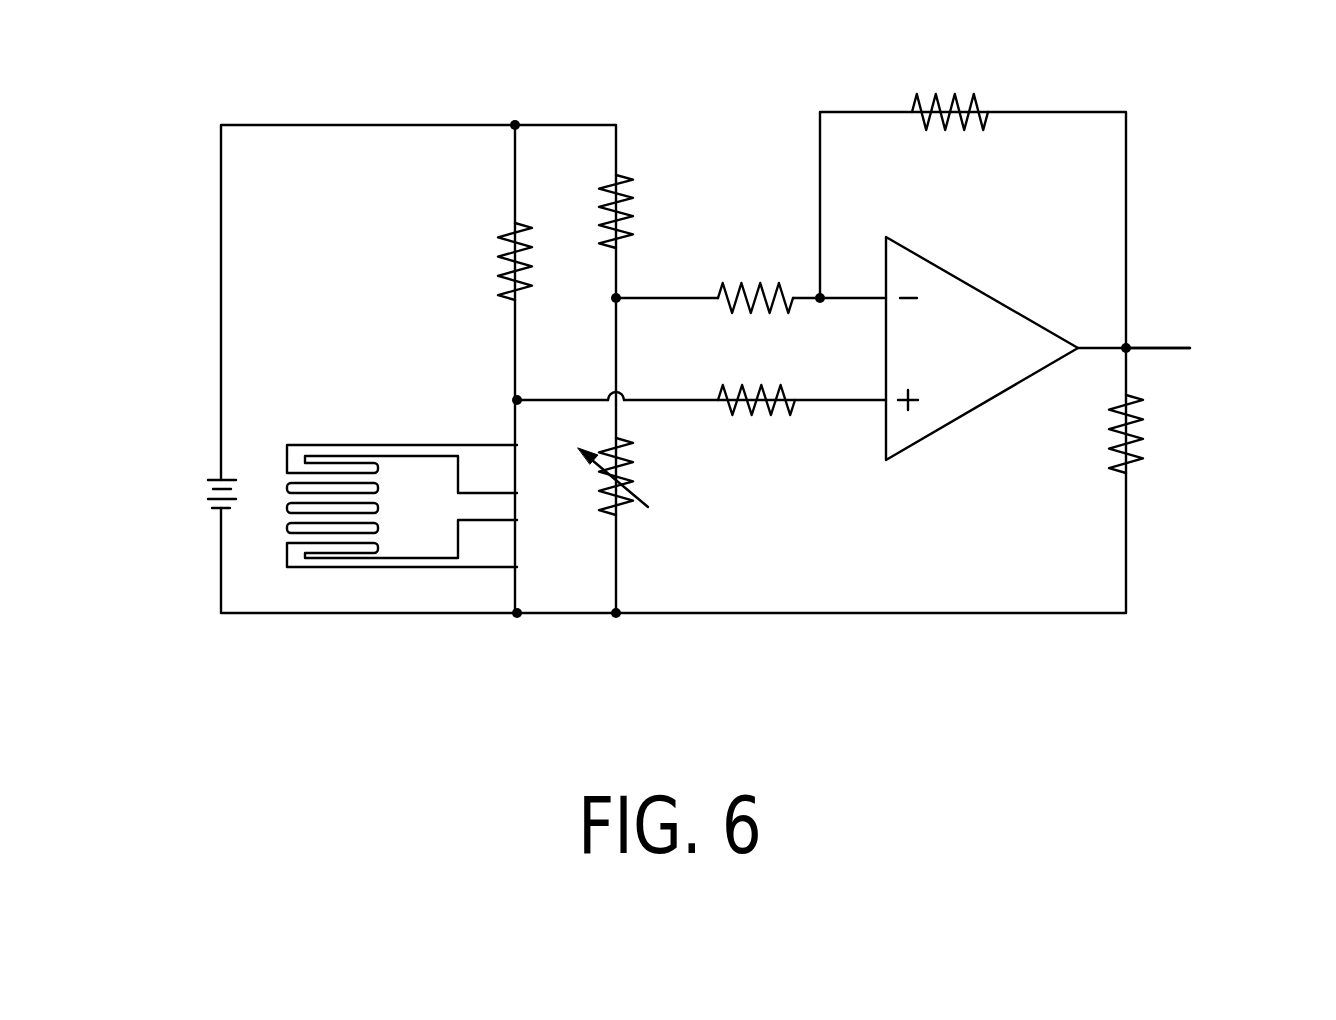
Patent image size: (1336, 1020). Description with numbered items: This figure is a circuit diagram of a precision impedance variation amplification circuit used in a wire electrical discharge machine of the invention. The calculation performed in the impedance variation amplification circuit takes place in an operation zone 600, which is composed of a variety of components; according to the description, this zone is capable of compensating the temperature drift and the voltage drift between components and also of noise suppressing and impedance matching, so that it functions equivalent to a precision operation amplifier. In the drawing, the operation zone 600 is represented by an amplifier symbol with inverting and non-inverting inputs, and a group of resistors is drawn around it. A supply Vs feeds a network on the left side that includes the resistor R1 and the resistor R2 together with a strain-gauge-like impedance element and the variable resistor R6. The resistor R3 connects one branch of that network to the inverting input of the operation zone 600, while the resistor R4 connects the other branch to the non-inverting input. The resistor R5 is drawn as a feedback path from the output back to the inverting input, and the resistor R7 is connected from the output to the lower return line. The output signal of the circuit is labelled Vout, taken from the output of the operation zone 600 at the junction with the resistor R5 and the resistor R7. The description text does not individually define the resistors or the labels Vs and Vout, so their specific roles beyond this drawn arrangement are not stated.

The resistor R1 is at (485, 252).
The resistor R2 is at (589, 201).
The resistor R3 is at (755, 266).
The resistor R4 is at (756, 431).
The feedback resistor R5 is at (950, 78).
The variable resistor R6 is at (631, 499).
The resistor R7 is at (1157, 434).
The operation zone 600 is at (960, 415).
The supply voltage source Vs is at (190, 486).
The output voltage Vout is at (1207, 349).